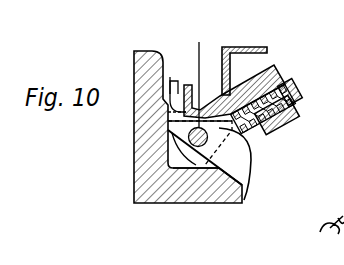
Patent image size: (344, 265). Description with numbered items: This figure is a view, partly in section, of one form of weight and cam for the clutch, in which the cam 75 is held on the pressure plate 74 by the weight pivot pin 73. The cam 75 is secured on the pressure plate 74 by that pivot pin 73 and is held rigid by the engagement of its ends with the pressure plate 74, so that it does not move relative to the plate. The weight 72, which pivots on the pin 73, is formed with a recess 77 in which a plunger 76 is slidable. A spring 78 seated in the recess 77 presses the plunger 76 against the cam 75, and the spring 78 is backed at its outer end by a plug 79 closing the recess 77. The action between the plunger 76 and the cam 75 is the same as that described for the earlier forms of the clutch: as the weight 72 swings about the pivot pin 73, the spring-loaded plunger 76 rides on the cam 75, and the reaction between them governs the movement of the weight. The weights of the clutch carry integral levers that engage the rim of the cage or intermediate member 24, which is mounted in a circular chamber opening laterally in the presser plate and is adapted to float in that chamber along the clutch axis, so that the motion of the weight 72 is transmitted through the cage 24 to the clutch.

The cage or intermediate member 24 is at (239, 50).
The weight 72 is at (268, 70).
The weight pivot pin 73 is at (196, 150).
The pressure plate 74 is at (212, 185).
The cam 75 is at (236, 163).
The plunger 76 is at (233, 121).
The recess 77 is at (268, 128).
The spring 78 is at (300, 110).
The plug 79 is at (300, 88).